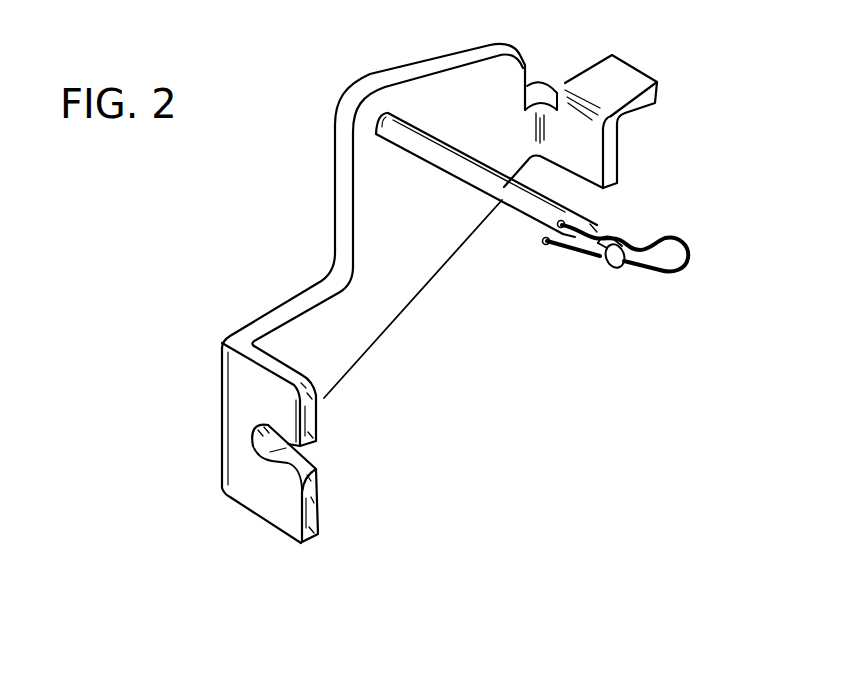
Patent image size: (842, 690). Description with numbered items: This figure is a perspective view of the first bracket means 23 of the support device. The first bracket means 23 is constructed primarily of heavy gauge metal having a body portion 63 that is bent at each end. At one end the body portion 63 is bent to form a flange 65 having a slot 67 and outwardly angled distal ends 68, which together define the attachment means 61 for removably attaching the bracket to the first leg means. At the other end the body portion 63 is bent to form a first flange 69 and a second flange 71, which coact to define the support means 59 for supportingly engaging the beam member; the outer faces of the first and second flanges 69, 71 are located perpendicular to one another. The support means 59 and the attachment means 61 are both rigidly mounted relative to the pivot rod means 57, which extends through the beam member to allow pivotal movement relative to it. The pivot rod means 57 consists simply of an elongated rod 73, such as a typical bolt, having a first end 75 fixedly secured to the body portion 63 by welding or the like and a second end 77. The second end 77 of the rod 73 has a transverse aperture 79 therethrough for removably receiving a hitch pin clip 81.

The first bracket means 23 is at (153, 219).
The pivot rod means 57 is at (528, 284).
The support means 59 is at (635, 42).
The attachment means 61 is at (340, 472).
The body portion 63 is at (437, 276).
The flange 65 is at (273, 507).
The slot 67 is at (270, 455).
The outwardly angled distal ends 68 is at (312, 414).
The first flange 69 is at (582, 153).
The second flange 71 is at (633, 82).
The elongated rod 73 is at (500, 193).
The first end 75 is at (388, 118).
The second end 77 is at (617, 268).
The transverse aperture 79 is at (597, 263).
The hitch pin clip 81 is at (668, 243).